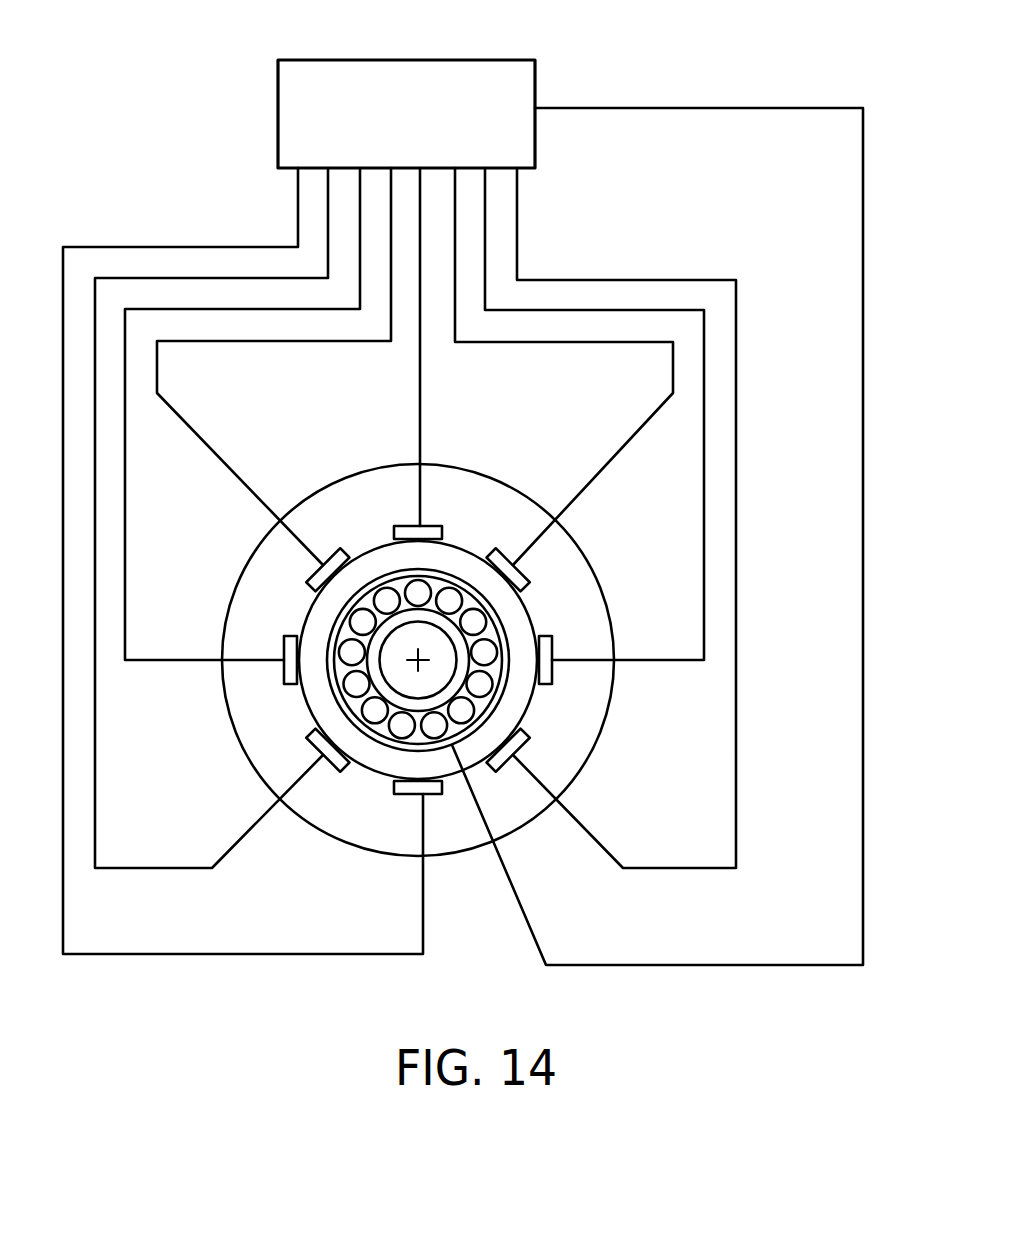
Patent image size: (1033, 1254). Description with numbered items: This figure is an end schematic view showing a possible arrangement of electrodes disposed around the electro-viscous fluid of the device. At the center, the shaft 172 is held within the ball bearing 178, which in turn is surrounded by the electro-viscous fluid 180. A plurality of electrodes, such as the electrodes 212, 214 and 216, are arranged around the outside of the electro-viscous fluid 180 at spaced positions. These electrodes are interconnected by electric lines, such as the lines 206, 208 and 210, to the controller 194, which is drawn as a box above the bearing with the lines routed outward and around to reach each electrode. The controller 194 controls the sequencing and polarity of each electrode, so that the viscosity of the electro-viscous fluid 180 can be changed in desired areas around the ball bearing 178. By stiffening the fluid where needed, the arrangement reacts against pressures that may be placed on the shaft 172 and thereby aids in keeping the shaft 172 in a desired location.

The controller 194 is at (506, 70).
The electric line 206 is at (420, 375).
The electric line 208 is at (627, 444).
The electric line 210 is at (643, 661).
The electrode 212 is at (433, 542).
The electrode 214 is at (511, 582).
The electrode 216 is at (546, 672).
The electro-viscous fluid 180 is at (373, 570).
The ball bearing 178 is at (360, 618).
The shaft 172 is at (398, 658).